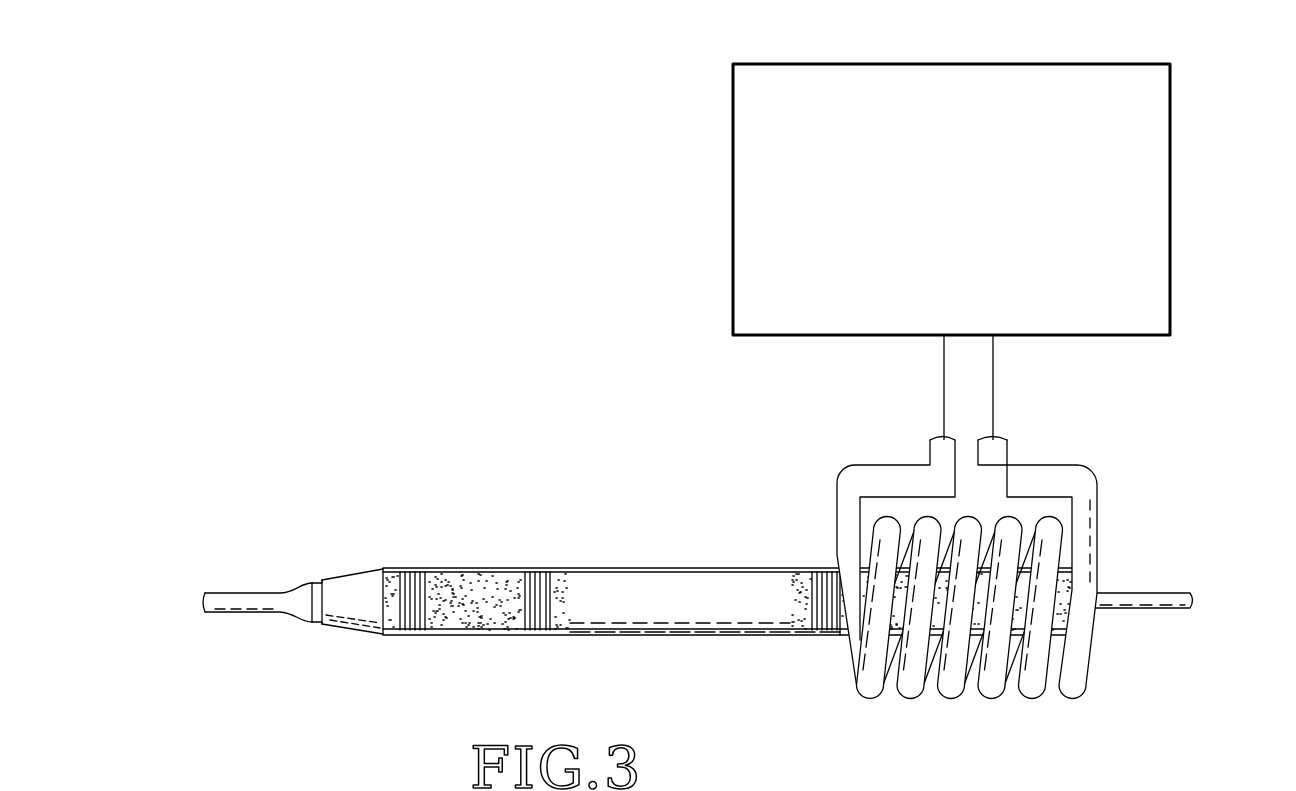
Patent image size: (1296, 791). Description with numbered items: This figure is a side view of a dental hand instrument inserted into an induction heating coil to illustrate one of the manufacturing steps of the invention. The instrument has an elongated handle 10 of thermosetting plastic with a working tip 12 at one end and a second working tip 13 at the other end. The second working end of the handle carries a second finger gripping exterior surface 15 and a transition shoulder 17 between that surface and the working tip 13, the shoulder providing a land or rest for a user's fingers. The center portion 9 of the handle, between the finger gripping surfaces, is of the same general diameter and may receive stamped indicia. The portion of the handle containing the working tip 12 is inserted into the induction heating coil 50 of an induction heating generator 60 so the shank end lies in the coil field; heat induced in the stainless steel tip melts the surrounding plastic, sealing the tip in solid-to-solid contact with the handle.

The center portion 9 is at (713, 637).
The elongated handle 10 is at (729, 580).
The working tip 12 is at (1173, 555).
The working tip 13 is at (249, 563).
The second finger gripping exterior surface 15 is at (475, 568).
The transition shoulder 17 is at (353, 577).
The induction heating coil 50 is at (1008, 452).
The induction heating generator 60 is at (1170, 212).